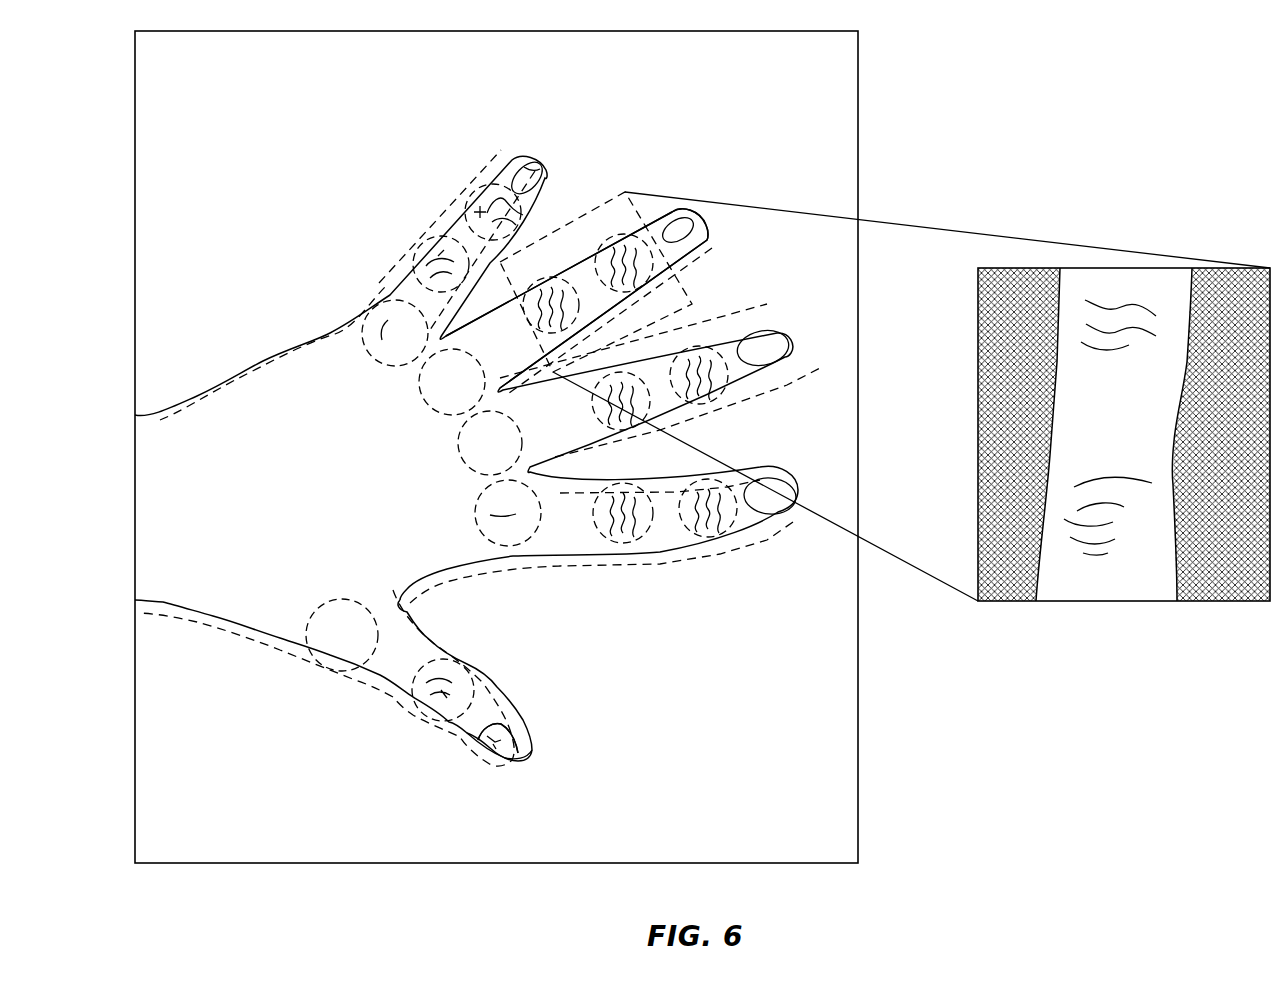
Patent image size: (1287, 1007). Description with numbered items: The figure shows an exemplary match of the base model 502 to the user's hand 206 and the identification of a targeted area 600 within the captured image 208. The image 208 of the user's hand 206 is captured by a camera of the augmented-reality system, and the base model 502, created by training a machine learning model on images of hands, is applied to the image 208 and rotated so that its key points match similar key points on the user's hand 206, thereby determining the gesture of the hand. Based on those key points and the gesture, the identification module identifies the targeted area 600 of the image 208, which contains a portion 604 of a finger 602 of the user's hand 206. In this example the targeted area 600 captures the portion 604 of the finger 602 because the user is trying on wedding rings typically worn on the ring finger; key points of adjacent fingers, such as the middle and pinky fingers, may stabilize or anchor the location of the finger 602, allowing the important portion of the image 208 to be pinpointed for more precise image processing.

The user's hand 206 is at (397, 282).
The image 208 is at (497, 863).
The base model 502 is at (470, 742).
The targeted area 600 is at (607, 200).
The finger 602 is at (702, 222).
The portion of a finger 604 is at (1103, 603).